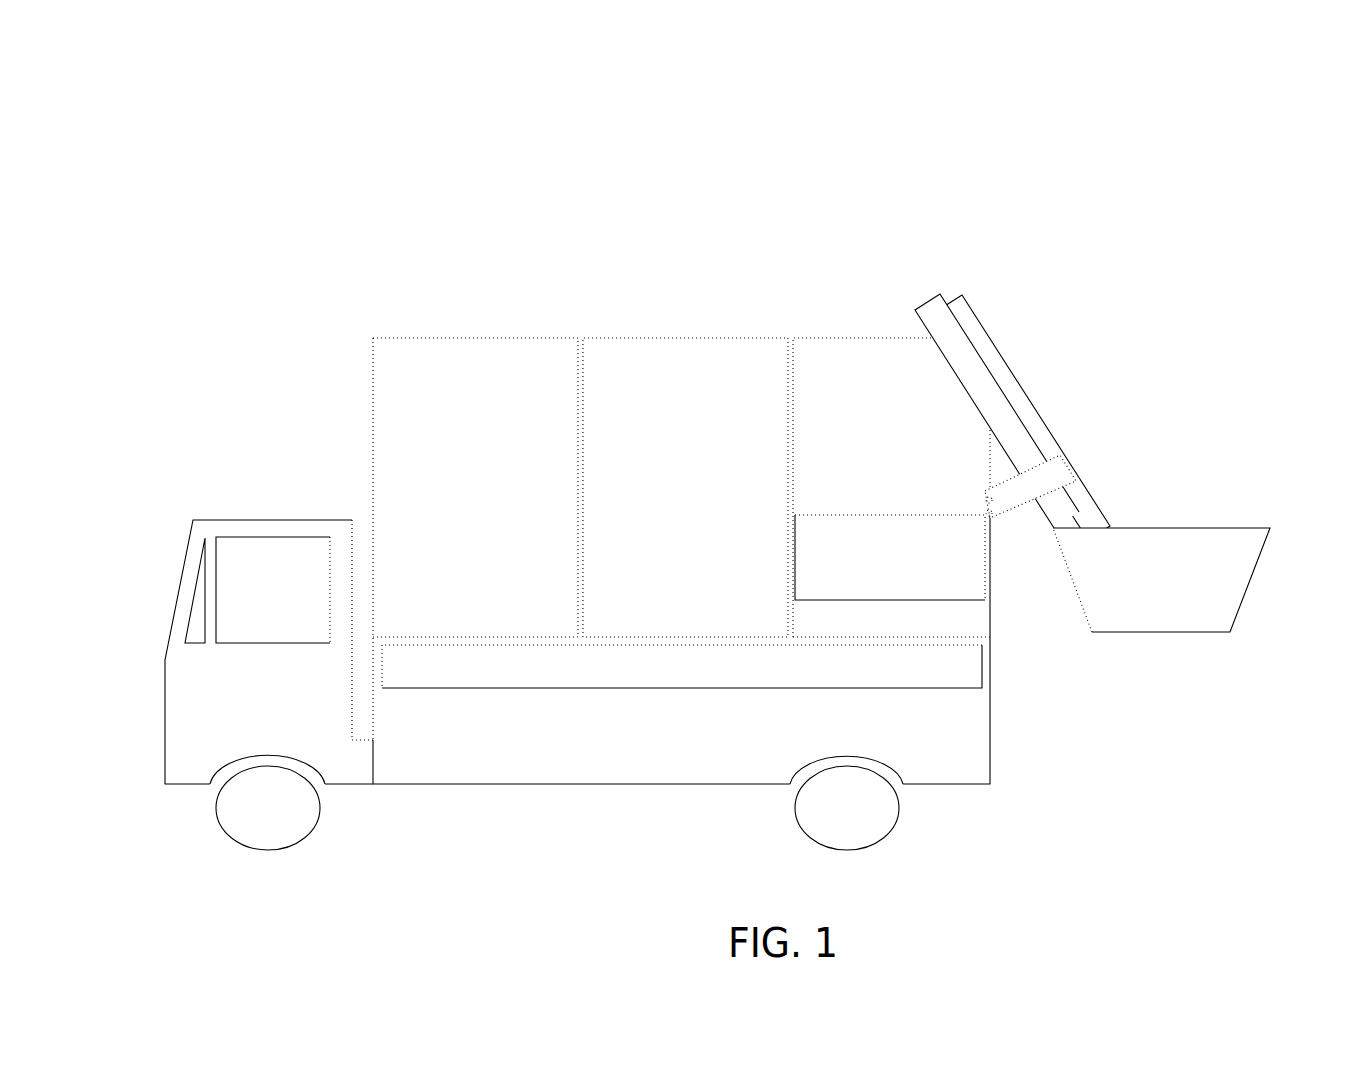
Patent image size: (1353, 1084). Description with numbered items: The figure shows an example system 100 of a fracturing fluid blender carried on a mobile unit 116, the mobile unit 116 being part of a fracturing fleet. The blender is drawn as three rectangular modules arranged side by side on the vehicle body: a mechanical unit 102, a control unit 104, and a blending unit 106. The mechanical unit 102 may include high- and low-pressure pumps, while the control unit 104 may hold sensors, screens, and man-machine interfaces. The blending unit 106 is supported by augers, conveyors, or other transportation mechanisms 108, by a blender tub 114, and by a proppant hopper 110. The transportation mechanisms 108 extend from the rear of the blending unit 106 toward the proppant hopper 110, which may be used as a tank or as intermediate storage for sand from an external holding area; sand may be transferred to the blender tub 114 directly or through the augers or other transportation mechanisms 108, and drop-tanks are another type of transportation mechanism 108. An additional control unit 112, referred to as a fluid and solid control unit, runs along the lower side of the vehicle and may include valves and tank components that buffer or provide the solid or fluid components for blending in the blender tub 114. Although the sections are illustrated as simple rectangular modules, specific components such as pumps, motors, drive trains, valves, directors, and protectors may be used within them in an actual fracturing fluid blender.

The system 100 is at (701, 444).
The mechanical unit 102 is at (442, 338).
The control unit 104 is at (659, 338).
The blending unit 106 is at (852, 338).
The transportation mechanisms 108 is at (1035, 413).
The proppant hopper 110 is at (1155, 527).
The additional control unit 112 is at (895, 675).
The blender tub 114 is at (905, 583).
The mobile unit 116 is at (238, 512).